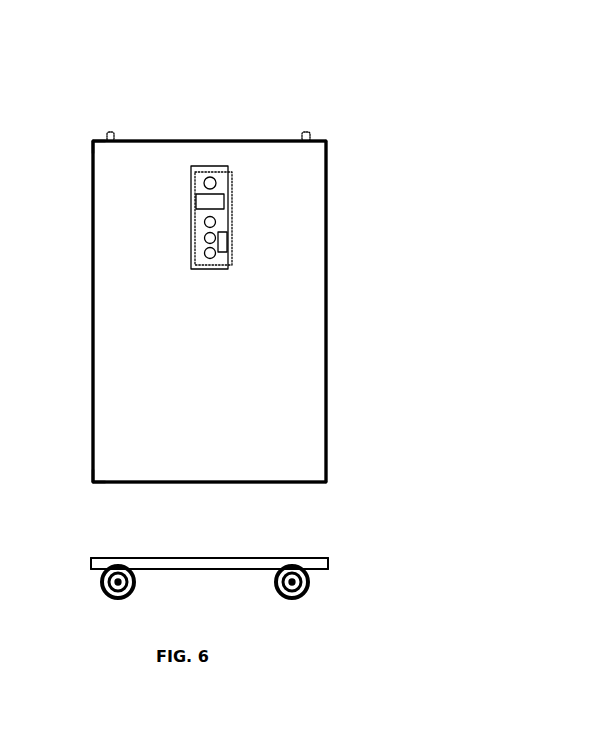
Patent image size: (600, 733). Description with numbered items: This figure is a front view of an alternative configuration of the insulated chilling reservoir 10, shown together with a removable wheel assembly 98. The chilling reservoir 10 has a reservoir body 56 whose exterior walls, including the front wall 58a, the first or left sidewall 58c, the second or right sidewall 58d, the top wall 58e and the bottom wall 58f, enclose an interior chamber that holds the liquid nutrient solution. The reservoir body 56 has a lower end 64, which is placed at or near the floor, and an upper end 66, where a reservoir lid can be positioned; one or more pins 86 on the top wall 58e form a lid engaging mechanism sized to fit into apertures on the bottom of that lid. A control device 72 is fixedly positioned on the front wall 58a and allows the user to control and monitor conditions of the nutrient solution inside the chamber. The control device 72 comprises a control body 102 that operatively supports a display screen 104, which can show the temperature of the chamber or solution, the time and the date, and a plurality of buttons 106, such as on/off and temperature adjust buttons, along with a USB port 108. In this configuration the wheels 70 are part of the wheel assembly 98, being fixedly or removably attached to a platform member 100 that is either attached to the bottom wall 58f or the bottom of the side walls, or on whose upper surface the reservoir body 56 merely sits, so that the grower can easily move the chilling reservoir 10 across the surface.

The chilling reservoir 10 is at (256, 75).
The reservoir body 56 is at (120, 407).
The front wall 58a is at (143, 331).
The first or left sidewall 58c is at (84, 240).
The second or right sidewall 58d is at (334, 216).
The top wall 58e is at (128, 132).
The bottom wall 58f is at (122, 494).
The lower end 64 is at (0, 3).
The upper end 66 is at (82, 145).
The wheels 70 is at (0, 36).
The control device 72 is at (186, 166).
The pins 86 is at (306, 133).
The wheel assembly 98 is at (82, 565).
The platform member 100 is at (250, 558).
The control body 102 is at (222, 181).
The display screen 104 is at (196, 200).
The buttons 106 is at (205, 238).
The USB port 108 is at (227, 242).